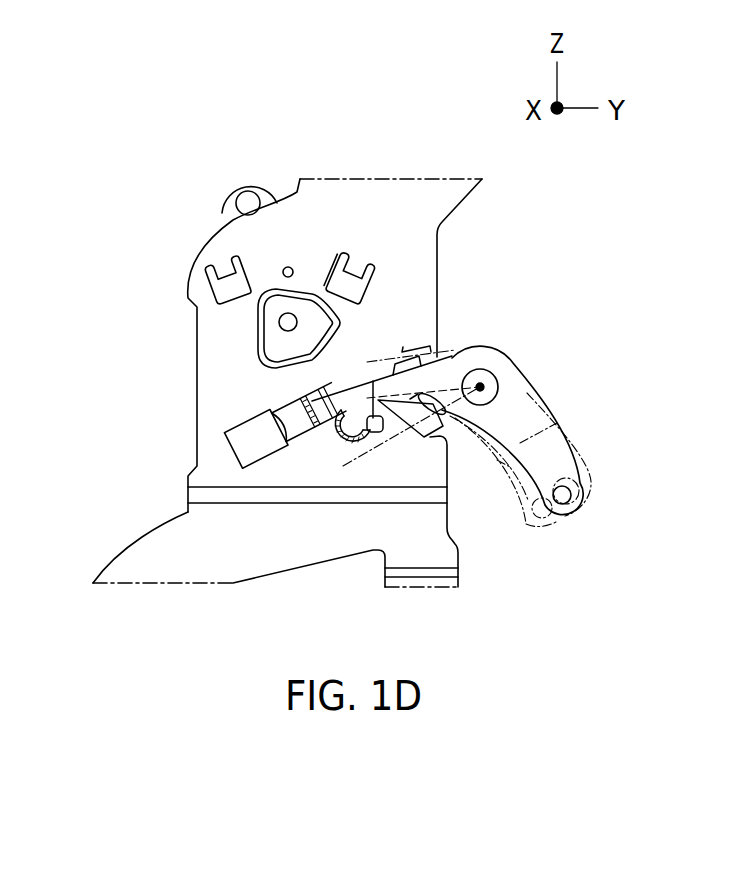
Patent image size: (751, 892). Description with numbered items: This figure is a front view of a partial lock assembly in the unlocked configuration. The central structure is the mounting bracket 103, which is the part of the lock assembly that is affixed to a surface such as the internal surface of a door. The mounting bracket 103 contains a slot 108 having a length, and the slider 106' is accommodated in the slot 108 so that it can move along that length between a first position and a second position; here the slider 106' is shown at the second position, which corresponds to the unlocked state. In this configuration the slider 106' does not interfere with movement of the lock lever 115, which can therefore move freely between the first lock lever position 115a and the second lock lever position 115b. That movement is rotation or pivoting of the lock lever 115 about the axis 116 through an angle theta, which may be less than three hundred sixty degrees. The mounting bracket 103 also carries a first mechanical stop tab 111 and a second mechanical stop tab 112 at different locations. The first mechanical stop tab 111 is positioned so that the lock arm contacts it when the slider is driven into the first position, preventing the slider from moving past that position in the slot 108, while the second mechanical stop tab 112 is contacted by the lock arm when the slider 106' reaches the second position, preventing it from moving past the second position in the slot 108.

The mounting bracket 103 is at (478, 192).
The first mechanical stop tab 111 is at (217, 257).
The second mechanical stop tab 112 is at (357, 258).
The slider 106' is at (226, 423).
The slot 108 is at (338, 392).
The lock lever 115 is at (567, 513).
The first lock lever position 115a is at (578, 452).
The second lock lever position 115b is at (543, 518).
The axis 116 is at (482, 387).